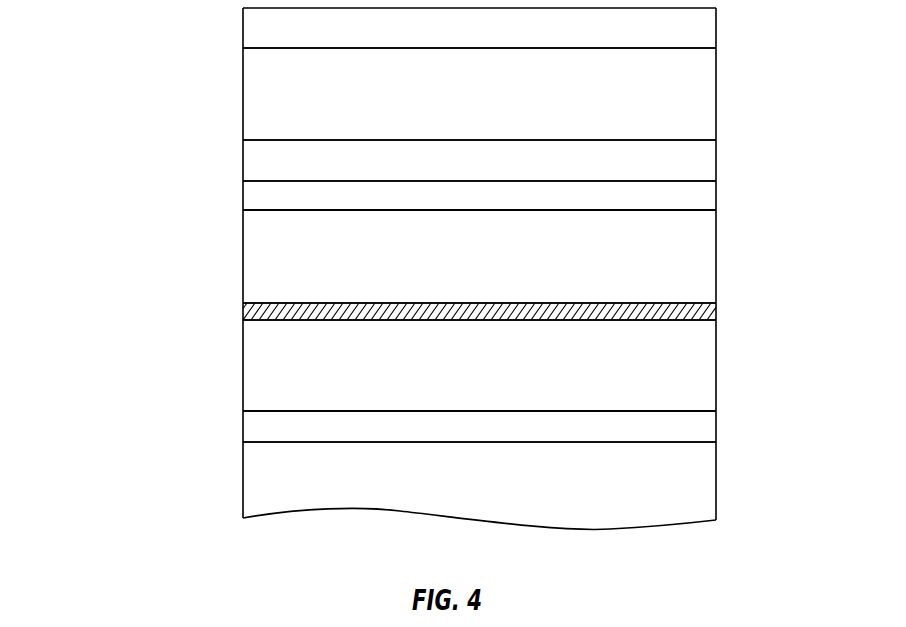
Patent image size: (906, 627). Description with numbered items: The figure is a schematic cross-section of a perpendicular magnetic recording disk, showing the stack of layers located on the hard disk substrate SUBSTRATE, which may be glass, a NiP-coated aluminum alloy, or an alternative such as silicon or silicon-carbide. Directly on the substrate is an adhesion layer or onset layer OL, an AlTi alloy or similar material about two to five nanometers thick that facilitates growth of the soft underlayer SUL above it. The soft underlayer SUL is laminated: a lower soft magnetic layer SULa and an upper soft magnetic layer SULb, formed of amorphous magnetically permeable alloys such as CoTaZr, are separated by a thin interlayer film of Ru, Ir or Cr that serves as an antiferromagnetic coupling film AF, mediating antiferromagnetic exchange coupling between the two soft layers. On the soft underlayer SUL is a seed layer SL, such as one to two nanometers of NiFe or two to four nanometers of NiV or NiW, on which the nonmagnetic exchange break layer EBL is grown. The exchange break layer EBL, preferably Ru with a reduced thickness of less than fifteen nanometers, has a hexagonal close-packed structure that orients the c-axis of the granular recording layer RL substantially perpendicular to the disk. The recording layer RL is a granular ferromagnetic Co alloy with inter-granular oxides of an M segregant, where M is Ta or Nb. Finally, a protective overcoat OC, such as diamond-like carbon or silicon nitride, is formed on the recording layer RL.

The overcoat OC is at (479, 28).
The recording layer RL is at (479, 94).
The exchange break layer EBL is at (479, 160).
The seed layer SL is at (479, 195).
The upper soft magnetic layer SULb is at (479, 256).
The antiferromagnetic coupling film AF is at (243, 310).
The lower soft magnetic layer SULa is at (479, 365).
The onset layer OL is at (479, 426).
The substrate SUBSTRATE is at (479, 485).
The soft underlayer SUL is at (727, 212).